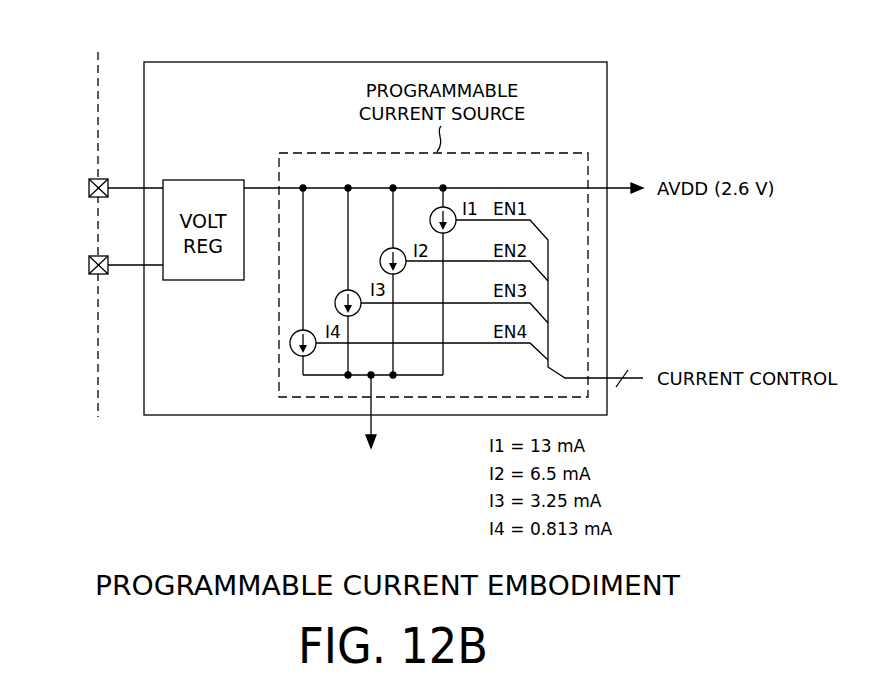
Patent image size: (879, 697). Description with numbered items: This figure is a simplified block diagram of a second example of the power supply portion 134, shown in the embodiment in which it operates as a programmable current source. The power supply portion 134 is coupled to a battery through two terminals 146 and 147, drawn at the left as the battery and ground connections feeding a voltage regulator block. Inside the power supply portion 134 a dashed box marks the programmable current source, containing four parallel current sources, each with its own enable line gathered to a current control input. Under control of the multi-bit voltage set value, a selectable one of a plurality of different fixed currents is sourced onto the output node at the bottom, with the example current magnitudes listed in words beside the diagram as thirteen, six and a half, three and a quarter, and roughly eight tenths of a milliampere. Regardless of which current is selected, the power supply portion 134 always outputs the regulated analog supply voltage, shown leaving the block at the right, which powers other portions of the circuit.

The power supply portion 134 is at (237, 62).
The terminal 146 is at (93, 178).
The terminal 147 is at (93, 256).